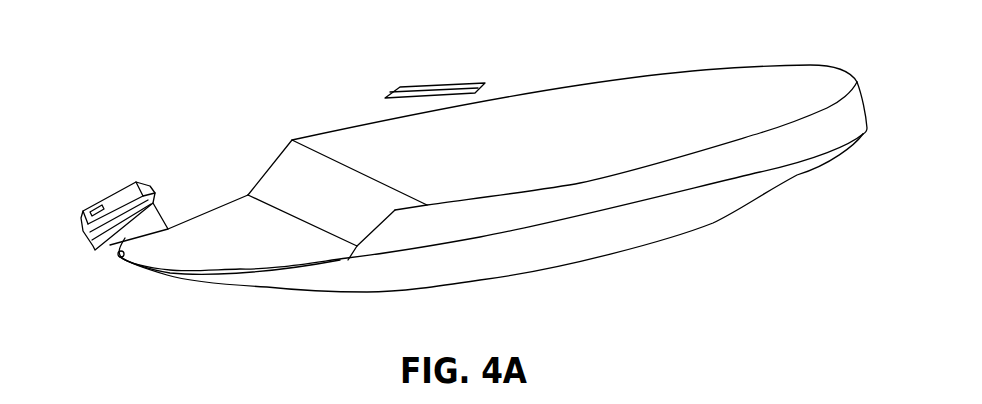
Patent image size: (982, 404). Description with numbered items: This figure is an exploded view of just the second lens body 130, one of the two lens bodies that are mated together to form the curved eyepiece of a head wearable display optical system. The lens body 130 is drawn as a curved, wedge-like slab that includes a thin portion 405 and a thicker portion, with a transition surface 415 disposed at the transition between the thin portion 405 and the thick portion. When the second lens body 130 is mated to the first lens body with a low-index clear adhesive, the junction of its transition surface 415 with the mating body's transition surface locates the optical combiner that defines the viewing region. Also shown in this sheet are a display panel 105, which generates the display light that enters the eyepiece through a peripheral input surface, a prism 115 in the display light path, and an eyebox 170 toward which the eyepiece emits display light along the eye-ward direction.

The second lens body 130 is at (285, 75).
The eyebox 170 is at (467, 90).
The display panel 105 is at (134, 180).
The prism 115 is at (125, 240).
The thin portion 405 is at (258, 247).
The transition surface 415 is at (377, 215).